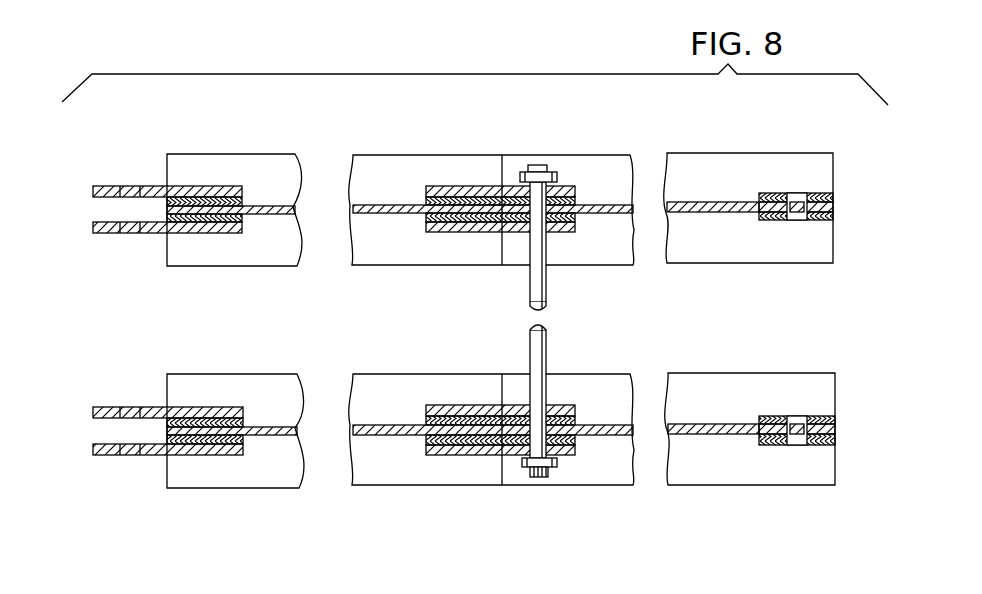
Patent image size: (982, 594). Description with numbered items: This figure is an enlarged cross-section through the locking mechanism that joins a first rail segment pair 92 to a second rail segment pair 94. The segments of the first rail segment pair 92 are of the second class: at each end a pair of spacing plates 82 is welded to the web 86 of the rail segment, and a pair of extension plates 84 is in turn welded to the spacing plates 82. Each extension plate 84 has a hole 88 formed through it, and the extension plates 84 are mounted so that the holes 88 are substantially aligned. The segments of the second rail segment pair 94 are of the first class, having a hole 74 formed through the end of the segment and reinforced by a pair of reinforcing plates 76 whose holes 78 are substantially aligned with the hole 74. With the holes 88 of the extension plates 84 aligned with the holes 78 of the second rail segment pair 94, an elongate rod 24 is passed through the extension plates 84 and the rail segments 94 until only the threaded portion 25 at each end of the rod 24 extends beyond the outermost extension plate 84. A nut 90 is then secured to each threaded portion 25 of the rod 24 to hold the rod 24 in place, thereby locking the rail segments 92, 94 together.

The elongate rod 24 is at (538, 478).
The threaded portion 25 is at (562, 177).
The hole 74 is at (797, 214).
The reinforcing plate 76 is at (813, 215).
The hole 78 is at (795, 200).
The spacing plate 82 is at (240, 216).
The extension plate 84 is at (152, 236).
The web 86 is at (380, 208).
The hole 88 is at (128, 232).
The nut 90 is at (560, 466).
The first rail segment pair 92 is at (257, 167).
The second rail segment pair 94 is at (612, 470).